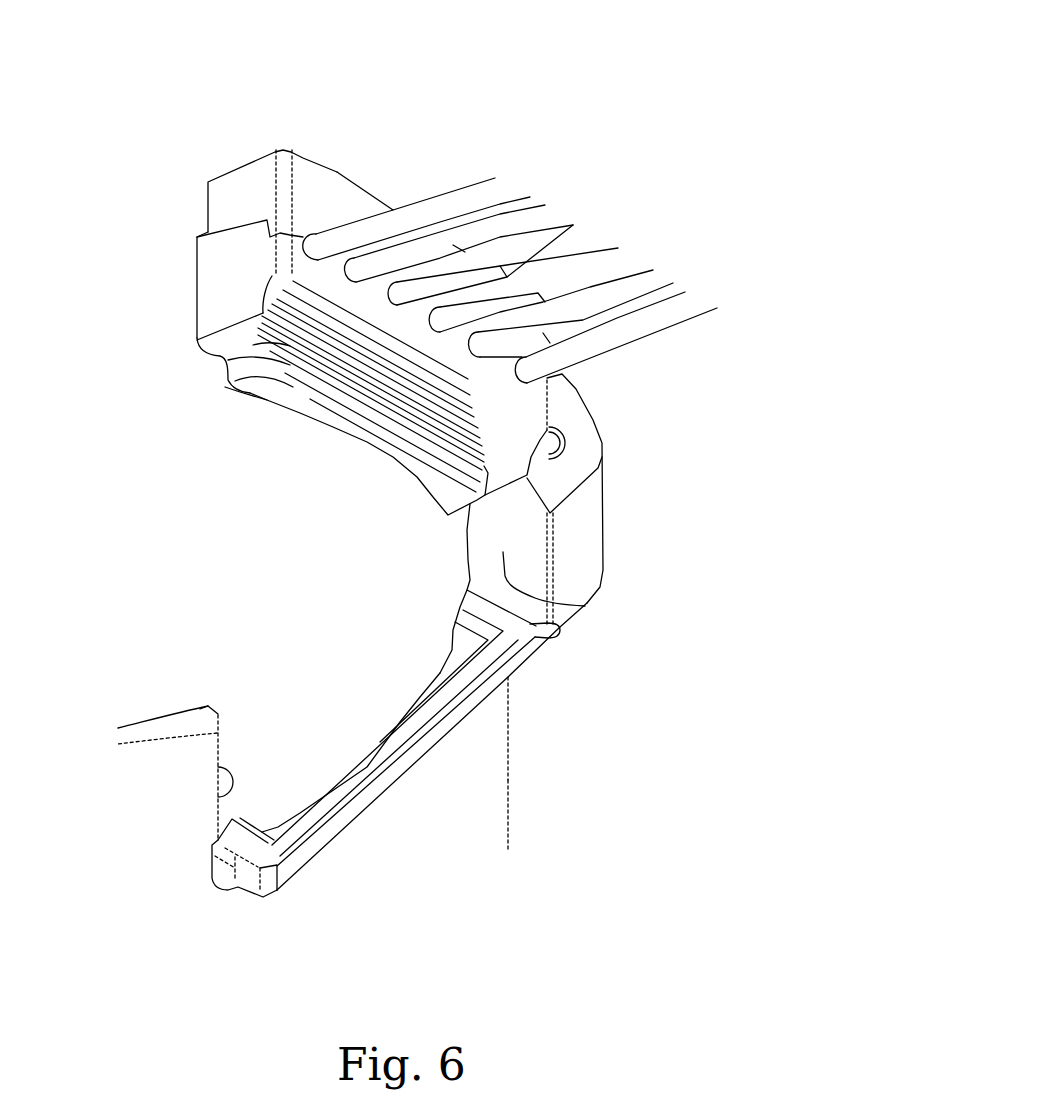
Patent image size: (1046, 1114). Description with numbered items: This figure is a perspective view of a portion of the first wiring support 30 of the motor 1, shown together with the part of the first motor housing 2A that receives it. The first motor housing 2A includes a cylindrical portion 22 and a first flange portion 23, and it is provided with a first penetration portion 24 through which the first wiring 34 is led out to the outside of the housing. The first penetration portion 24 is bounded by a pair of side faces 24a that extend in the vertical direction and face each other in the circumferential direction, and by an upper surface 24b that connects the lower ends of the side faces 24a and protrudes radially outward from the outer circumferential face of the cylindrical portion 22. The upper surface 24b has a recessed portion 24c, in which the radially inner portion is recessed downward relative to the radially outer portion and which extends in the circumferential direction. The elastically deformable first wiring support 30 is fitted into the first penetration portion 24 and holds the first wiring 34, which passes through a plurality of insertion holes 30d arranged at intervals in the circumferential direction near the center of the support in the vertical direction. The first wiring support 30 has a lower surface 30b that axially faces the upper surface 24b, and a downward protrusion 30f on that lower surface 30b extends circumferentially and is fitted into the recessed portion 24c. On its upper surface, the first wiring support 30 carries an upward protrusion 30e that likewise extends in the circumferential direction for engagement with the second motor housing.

The motor 1 is at (627, 162).
The first wiring support 30 is at (336, 168).
The insertion hole 30d is at (318, 236).
The upward protrusion 30e is at (364, 192).
The first wiring 34 is at (450, 188).
The lower surface 30b is at (222, 369).
The downward protrusion 30f is at (270, 392).
The first flange portion 23 is at (607, 447).
The side face 24a is at (587, 605).
The upper surface 24b is at (540, 640).
The recessed portion 24c is at (273, 832).
The first motor housing 2A is at (508, 742).
The cylindrical portion 22 is at (508, 800).
The first penetration portion 24 is at (235, 730).